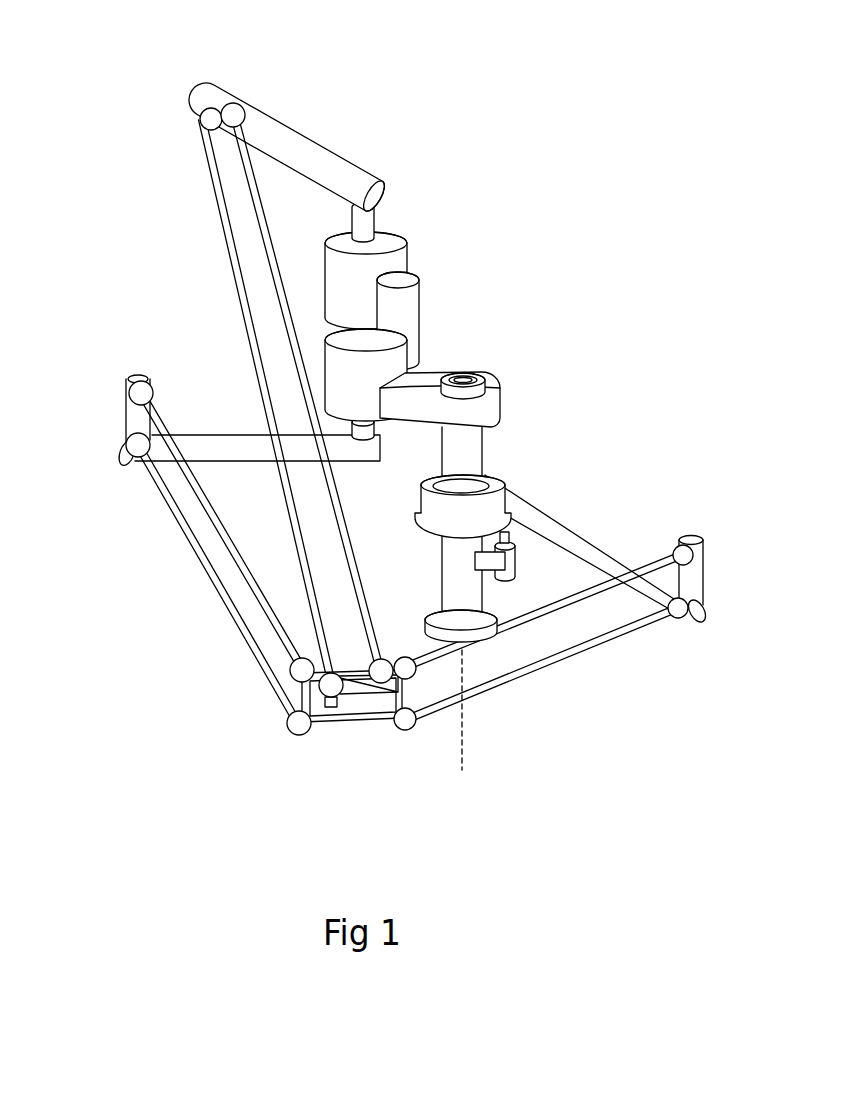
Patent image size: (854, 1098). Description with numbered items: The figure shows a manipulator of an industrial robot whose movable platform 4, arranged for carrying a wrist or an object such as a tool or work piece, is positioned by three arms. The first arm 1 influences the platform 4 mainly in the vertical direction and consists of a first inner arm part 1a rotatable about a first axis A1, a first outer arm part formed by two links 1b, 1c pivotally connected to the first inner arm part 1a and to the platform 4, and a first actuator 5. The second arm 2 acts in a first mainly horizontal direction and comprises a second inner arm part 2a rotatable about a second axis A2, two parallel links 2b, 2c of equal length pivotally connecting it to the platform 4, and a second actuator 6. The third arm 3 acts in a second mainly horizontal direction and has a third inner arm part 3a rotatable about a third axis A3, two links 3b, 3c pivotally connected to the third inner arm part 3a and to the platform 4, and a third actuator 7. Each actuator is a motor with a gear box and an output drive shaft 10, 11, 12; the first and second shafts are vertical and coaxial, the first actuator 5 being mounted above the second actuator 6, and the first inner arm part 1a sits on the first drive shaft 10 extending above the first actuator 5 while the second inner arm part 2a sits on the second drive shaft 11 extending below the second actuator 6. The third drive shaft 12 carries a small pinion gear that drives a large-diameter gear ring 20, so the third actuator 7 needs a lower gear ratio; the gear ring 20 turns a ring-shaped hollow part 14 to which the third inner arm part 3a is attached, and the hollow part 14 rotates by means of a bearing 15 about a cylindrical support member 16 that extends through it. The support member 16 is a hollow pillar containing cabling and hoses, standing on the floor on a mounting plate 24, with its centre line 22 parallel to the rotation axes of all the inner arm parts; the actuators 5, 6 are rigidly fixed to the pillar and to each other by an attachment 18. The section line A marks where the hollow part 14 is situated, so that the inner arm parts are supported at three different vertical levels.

The first arm 1 is at (226, 346).
The first inner arm part 1a is at (295, 130).
The link of first outer arm part 1b is at (200, 143).
The link of first outer arm part 1c is at (247, 193).
The second arm 2 is at (196, 549).
The second inner arm part 2a is at (212, 452).
The link of second outer arm part 2b is at (203, 558).
The link of second outer arm part 2c is at (225, 532).
The third arm 3 is at (564, 620).
The third inner arm part 3a is at (602, 565).
The link of third outer arm part 3b is at (580, 657).
The link of third outer arm part 3c is at (520, 623).
The movable platform 4 is at (347, 717).
The first actuator 5 is at (327, 275).
The second actuator 6 is at (327, 367).
The third actuator 7 is at (513, 555).
The first drive shaft 10 is at (367, 220).
The second drive shaft 11 is at (353, 432).
The third drive shaft 12 is at (508, 531).
The hollow part 14 is at (508, 492).
The bearing 15 is at (498, 487).
The support member 16 is at (476, 447).
The attachment 18 is at (413, 368).
The gear ring 20 is at (422, 512).
The centre line 22 is at (460, 745).
The mounting plate 24 is at (447, 640).
The section line A- A is at (420, 504).
The first axis A1 is at (365, 172).
The second axis A2 is at (362, 457).
The third axis A3 is at (464, 370).